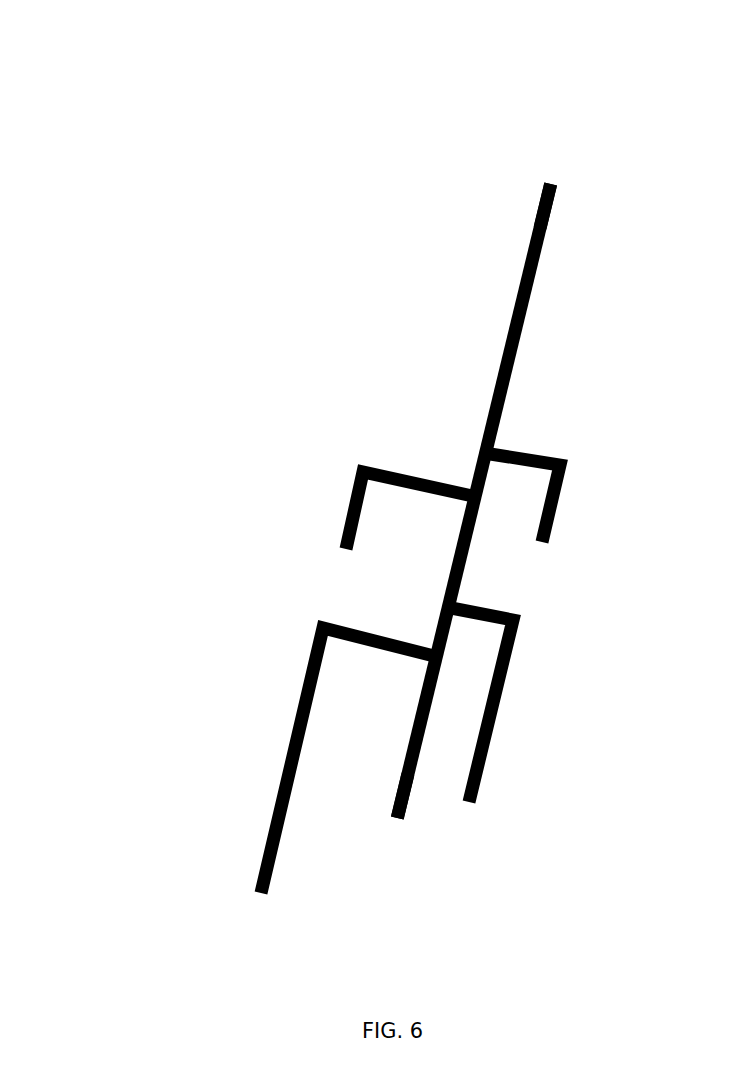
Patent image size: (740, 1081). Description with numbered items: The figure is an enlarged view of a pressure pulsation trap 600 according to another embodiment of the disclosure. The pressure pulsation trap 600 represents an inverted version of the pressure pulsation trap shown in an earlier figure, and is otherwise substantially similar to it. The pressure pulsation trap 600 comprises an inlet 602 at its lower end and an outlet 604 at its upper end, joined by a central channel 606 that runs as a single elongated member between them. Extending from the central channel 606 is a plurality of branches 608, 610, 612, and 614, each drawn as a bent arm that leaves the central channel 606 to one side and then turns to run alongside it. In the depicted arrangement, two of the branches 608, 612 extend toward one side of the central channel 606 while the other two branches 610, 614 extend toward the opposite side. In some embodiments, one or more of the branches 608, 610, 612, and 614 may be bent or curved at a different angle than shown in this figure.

The pressure pulsation trap 600 is at (347, 455).
The inlet 602 is at (407, 815).
The outlet 604 is at (547, 188).
The central channel 606 is at (517, 307).
The branch 608 is at (557, 510).
The branch 610 is at (358, 482).
The branch 612 is at (493, 712).
The branch 614 is at (295, 725).